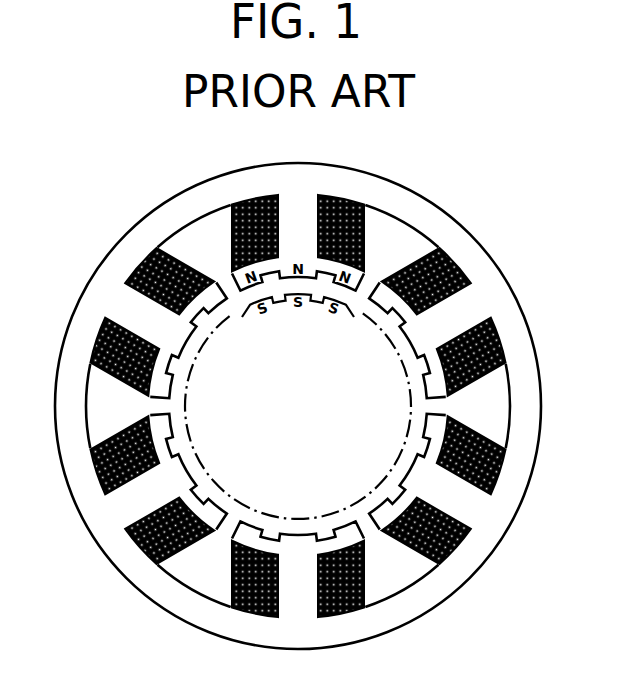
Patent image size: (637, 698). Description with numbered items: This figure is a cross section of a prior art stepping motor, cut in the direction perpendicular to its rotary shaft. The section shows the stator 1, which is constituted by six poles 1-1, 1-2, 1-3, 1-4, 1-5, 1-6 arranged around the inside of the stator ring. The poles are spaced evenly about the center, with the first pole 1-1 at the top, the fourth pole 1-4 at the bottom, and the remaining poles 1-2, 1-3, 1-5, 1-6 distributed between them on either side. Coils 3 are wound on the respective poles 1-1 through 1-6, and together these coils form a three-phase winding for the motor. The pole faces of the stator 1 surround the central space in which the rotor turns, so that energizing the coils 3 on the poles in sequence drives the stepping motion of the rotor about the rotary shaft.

The stator 1 is at (131, 224).
The coil 3 is at (360, 232).
The pole 1-1 is at (298, 243).
The pole 1-2 is at (439, 324).
The pole 1-3 is at (439, 488).
The pole 1-4 is at (298, 569).
The pole 1-5 is at (156, 488).
The pole 1-6 is at (156, 324).